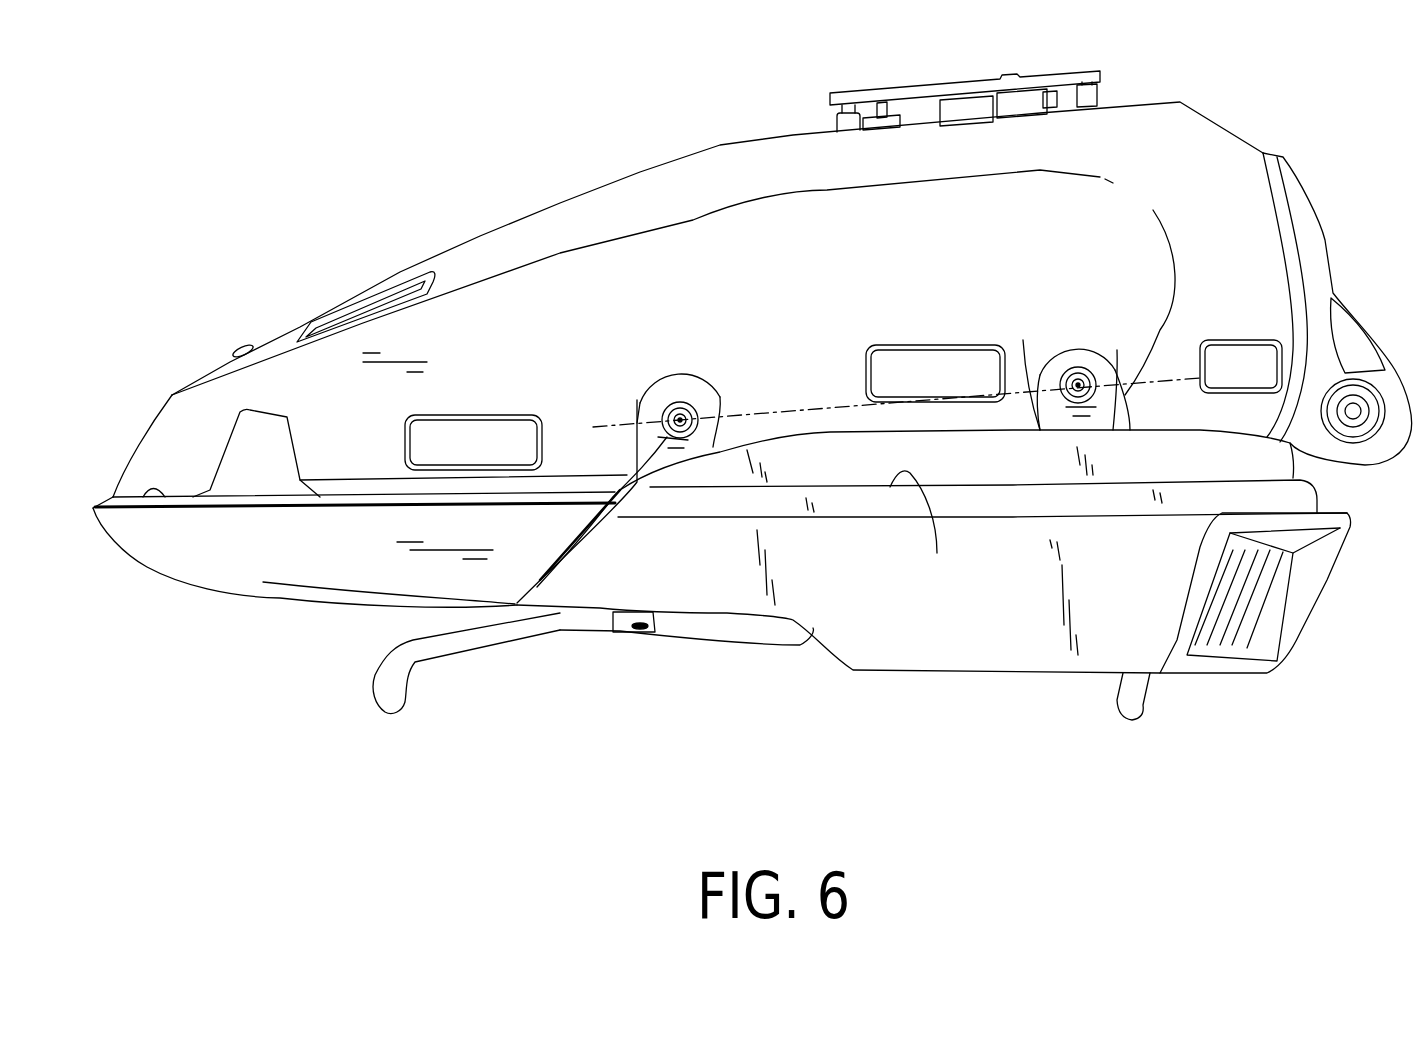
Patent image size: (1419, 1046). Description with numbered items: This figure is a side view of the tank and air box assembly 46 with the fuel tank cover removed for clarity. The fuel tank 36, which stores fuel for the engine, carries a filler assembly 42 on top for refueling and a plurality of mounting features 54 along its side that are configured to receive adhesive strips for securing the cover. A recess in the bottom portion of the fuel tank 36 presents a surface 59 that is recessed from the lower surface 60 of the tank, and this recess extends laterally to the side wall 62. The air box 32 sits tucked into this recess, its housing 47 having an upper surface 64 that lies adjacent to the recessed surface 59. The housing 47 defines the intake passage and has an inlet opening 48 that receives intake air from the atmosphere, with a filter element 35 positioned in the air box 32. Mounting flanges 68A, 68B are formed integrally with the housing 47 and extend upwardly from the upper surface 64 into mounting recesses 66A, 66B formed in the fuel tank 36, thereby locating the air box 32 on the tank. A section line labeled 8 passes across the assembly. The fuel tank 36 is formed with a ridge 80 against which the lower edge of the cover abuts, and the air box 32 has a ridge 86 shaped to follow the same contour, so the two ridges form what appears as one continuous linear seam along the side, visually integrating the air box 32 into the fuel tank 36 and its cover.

The tank and air box assembly 46 is at (495, 117).
The filler assembly 42 is at (850, 90).
The fuel tank 36 is at (1218, 146).
The mounting features 54 is at (400, 298).
The side wall 62 is at (950, 253).
The section line 8- 8 is at (611, 418).
The mounting flange 68A is at (707, 445).
The mounting flange 68B is at (1050, 412).
The mounting recess 66A is at (670, 450).
The mounting recess 66B is at (1098, 398).
The upper surface 64 is at (877, 425).
The ridge 86 is at (923, 531).
The surface 59 is at (1007, 442).
The filter element 35 is at (1267, 583).
The inlet opening 48 is at (1273, 640).
The air box 32 is at (927, 637).
The housing 47 is at (1022, 653).
The ridge 80 is at (165, 513).
The lower surface 60 is at (308, 605).